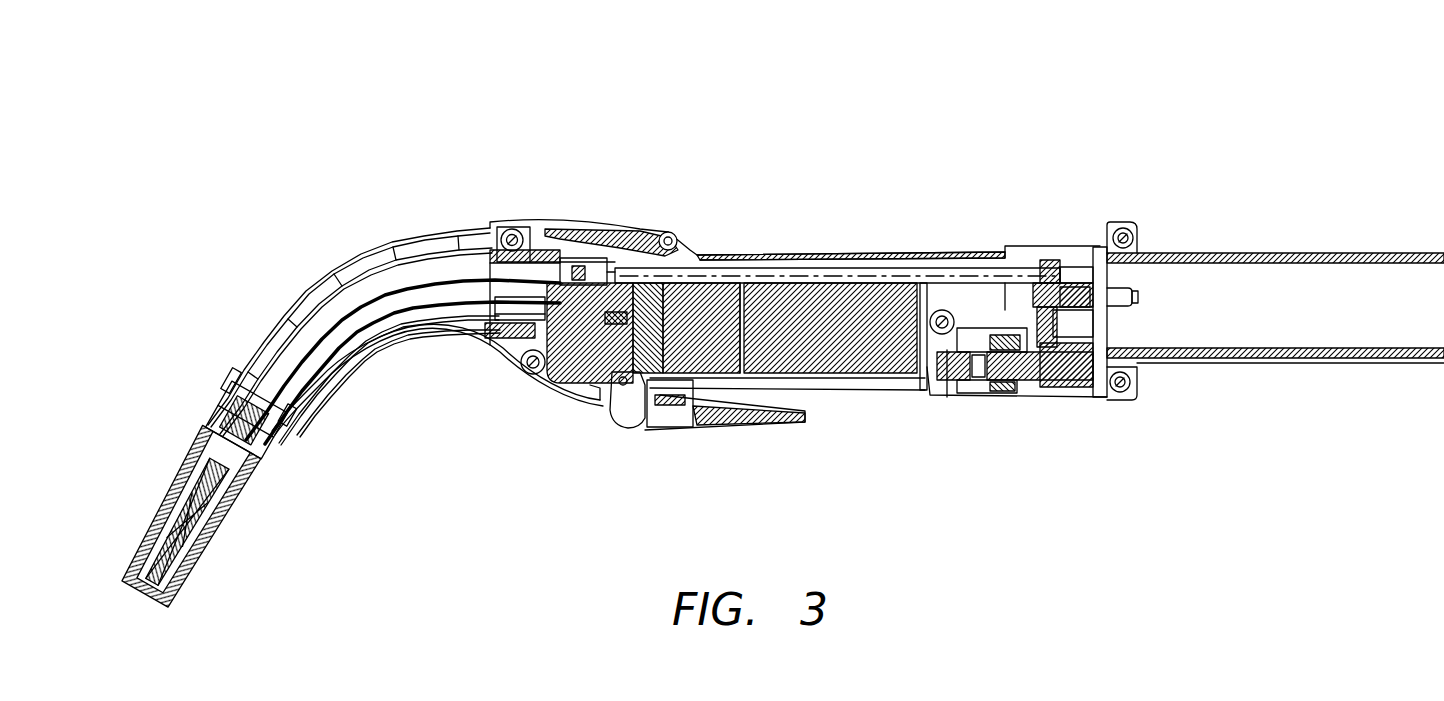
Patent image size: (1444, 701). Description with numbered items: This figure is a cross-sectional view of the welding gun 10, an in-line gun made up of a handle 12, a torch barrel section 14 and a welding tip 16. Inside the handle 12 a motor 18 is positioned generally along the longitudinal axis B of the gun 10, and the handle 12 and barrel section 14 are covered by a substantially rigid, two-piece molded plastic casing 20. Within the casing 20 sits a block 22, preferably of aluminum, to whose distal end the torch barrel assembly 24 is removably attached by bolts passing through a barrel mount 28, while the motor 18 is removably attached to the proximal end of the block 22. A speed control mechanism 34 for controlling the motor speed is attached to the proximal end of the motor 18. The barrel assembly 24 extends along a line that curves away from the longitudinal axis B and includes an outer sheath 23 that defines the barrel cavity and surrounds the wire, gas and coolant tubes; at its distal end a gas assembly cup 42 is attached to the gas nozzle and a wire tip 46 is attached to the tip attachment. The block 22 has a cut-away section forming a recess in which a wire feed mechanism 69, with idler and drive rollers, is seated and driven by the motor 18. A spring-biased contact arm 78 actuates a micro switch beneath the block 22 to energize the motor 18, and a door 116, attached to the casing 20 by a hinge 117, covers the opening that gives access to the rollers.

The welding gun 10 is at (850, 95).
The handle 12 is at (868, 230).
The torch barrel section 14 is at (227, 298).
The welding tip 16 is at (168, 447).
The motor 18 is at (843, 355).
The casing 20 is at (957, 253).
The block 22 is at (577, 390).
The outer sheath 23 is at (363, 332).
The torch barrel assembly 24 is at (333, 297).
The barrel mount 28 is at (515, 352).
The speed control mechanism 34 is at (987, 413).
The gas assembly cup 42 is at (155, 515).
The wire tip 46 is at (197, 567).
The wire feed mechanism 69 is at (588, 237).
The contact arm 78 is at (720, 420).
The door 116 is at (610, 228).
The hinge 117 is at (670, 235).
The longitudinal axis B is at (750, 273).